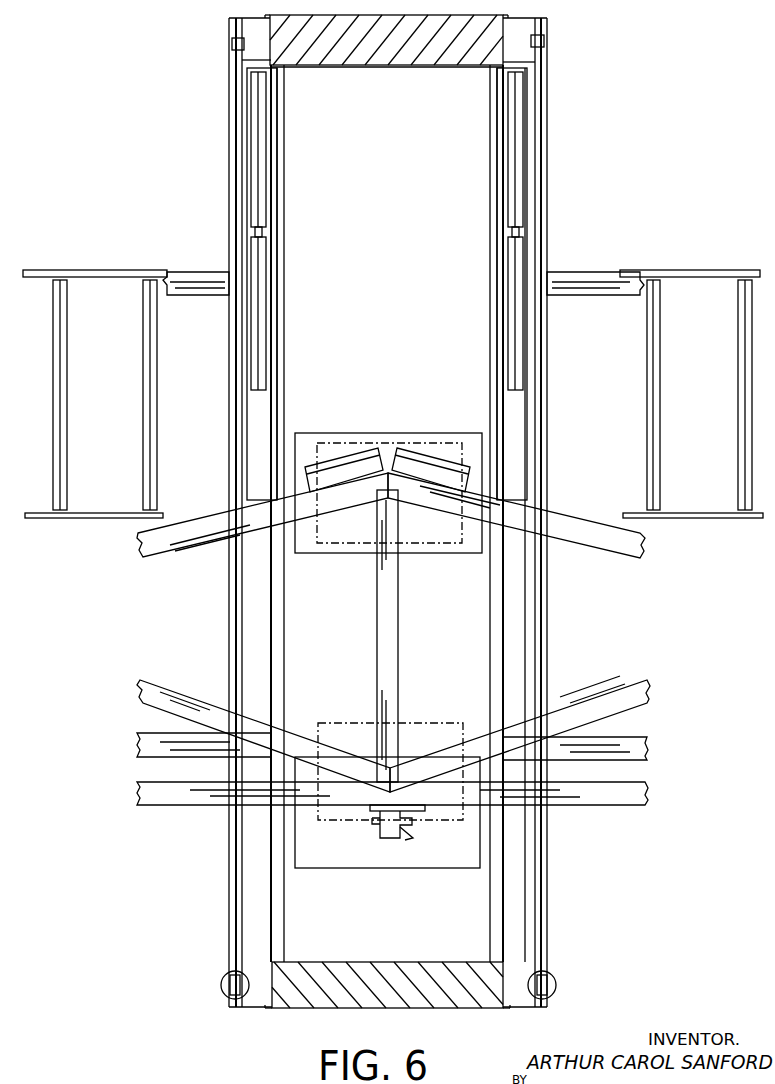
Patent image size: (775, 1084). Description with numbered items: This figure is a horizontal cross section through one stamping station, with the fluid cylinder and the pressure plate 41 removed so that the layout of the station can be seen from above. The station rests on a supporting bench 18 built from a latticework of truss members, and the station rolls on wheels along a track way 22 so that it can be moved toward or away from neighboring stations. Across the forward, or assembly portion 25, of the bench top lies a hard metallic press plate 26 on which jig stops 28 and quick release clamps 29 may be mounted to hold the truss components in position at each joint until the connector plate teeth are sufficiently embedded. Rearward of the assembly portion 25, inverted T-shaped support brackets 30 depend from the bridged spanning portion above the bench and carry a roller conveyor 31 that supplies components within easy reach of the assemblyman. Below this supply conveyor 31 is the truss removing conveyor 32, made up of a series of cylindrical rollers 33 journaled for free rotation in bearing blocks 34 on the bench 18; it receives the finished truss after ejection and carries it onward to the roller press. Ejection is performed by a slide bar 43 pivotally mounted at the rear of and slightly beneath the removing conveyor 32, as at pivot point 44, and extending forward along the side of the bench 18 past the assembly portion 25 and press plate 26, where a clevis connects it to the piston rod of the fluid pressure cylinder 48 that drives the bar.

The supporting bench 18 is at (503, 593).
The track way 22 is at (607, 295).
The assembly portion 25 is at (432, 662).
The press plate 26 is at (330, 548).
The jig stop 28 is at (357, 462).
The quick release clamp 29 is at (390, 838).
The inverted T-shaped support bracket 30 is at (490, 338).
The roller conveyor 31 is at (95, 270).
The truss removing conveyor 32 is at (520, 215).
The cylindrical roller 33 is at (514, 148).
The bearing block 34 is at (262, 68).
The pressure plate 41 is at (417, 537).
The slide bar 43 is at (233, 432).
The pivot point 44 is at (232, 45).
The fluid pressure cylinder 48 is at (226, 986).